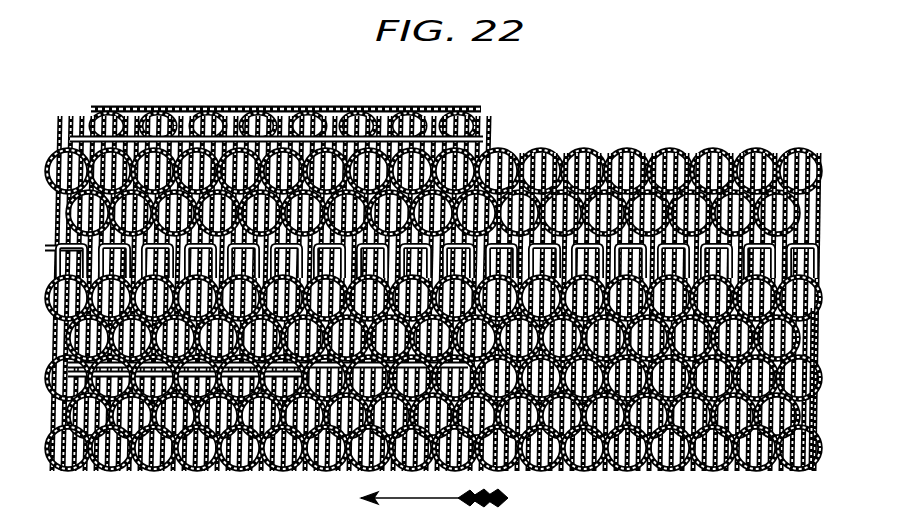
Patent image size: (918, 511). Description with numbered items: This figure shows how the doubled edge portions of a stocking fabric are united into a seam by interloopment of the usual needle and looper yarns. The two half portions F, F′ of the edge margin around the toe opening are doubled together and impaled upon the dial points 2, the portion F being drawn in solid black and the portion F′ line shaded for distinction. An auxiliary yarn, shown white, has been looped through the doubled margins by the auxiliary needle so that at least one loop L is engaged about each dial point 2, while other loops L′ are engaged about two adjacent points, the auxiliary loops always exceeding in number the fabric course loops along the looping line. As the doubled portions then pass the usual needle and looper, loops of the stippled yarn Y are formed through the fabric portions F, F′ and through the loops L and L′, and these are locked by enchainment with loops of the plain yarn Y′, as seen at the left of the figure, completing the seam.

The yarn Y is at (176, 101).
The yarn Y′ is at (78, 128).
The loop L is at (83, 463).
The loop L′ is at (399, 457).
The portion of the fabric F is at (563, 142).
The portion of the fabric F′ is at (730, 153).
The points 2 is at (432, 329).